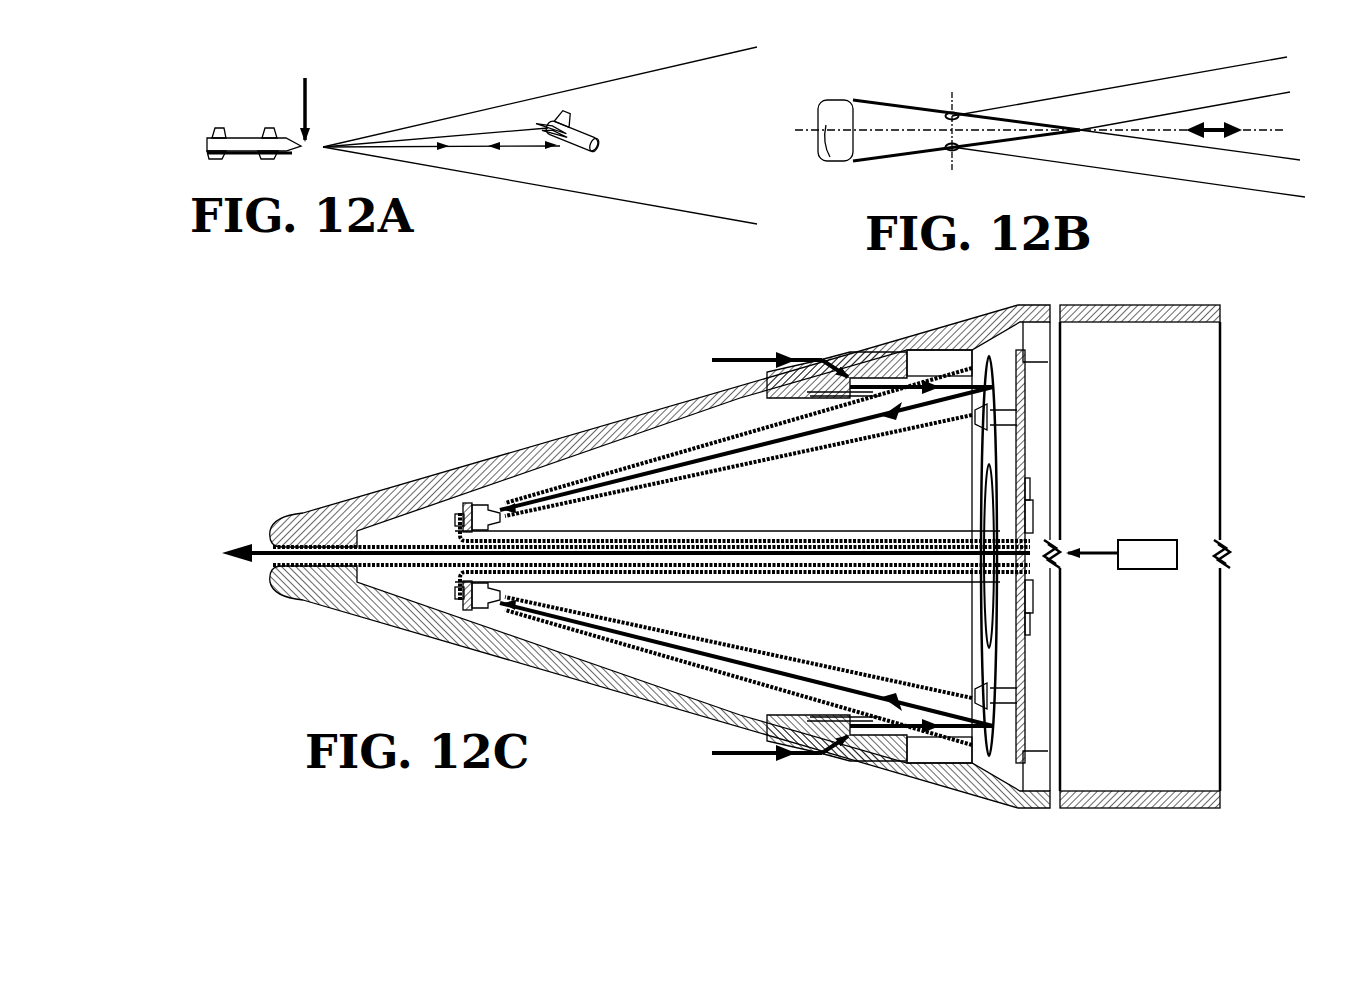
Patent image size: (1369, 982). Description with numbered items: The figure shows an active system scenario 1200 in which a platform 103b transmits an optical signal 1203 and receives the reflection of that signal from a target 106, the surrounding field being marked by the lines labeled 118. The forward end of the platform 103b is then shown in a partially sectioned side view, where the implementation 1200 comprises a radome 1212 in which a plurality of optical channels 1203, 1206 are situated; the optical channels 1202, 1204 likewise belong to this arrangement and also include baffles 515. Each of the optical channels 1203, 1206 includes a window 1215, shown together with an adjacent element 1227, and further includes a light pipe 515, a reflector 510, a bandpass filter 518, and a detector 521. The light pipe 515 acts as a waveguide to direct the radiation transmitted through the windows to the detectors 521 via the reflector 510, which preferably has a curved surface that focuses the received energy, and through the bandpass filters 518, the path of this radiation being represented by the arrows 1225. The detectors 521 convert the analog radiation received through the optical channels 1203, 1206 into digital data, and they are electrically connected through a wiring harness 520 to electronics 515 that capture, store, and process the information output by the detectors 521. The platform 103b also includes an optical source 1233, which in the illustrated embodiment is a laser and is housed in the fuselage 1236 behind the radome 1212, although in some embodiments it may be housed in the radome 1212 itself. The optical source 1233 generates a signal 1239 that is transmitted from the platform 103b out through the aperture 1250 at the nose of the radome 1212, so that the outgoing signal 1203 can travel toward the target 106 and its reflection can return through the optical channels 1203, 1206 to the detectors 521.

In FIG. 12A, the active system scenario 1200 is at (262, 61).
In FIG. 12B, the active system scenario 1200 is at (891, 152).
In FIG. 12C, the active system scenario 1200 is at (367, 396).
In FIG. 12A, the platform 103b is at (257, 131).
In FIG. 12B, the platform 103b is at (872, 66).
In FIG. 12A, the optical signal 1203 is at (477, 139).
In FIG. 12C, the optical signal 1203 is at (795, 806).
In FIG. 12A, the target 106 is at (600, 129).
In FIG. 12A, the field of view 118 is at (721, 110).
In FIG. 12B, the optical channel 1202 is at (958, 113).
In FIG. 12B, the optical channel 1204 is at (958, 150).
In FIG. 12B, the optical channel 1206 is at (1283, 130).
In FIG. 12C, the optical channel 1206 is at (800, 326).
In FIG. 12C, the fuselage 1236 is at (1136, 305).
In FIG. 12C, the window 1215 is at (877, 348).
In FIG. 12C, the window 1227 is at (913, 377).
In FIG. 12C, the arrows 1225 is at (712, 357).
In FIG. 12C, the radome 1212 is at (421, 479).
In FIG. 12C, the detector 521 is at (456, 500).
In FIG. 12C, the bandpass filter 518 is at (466, 500).
In FIG. 12C, the aperture 1250 is at (284, 528).
In FIG. 12C, the light pipe 515 is at (857, 430).
In FIG. 12C, the wiring harness 520 is at (742, 528).
In FIG. 12C, the signal 1239 is at (1087, 547).
In FIG. 12C, the optical source 1233 is at (1133, 568).
In FIG. 12C, the reflector 510 is at (985, 653).